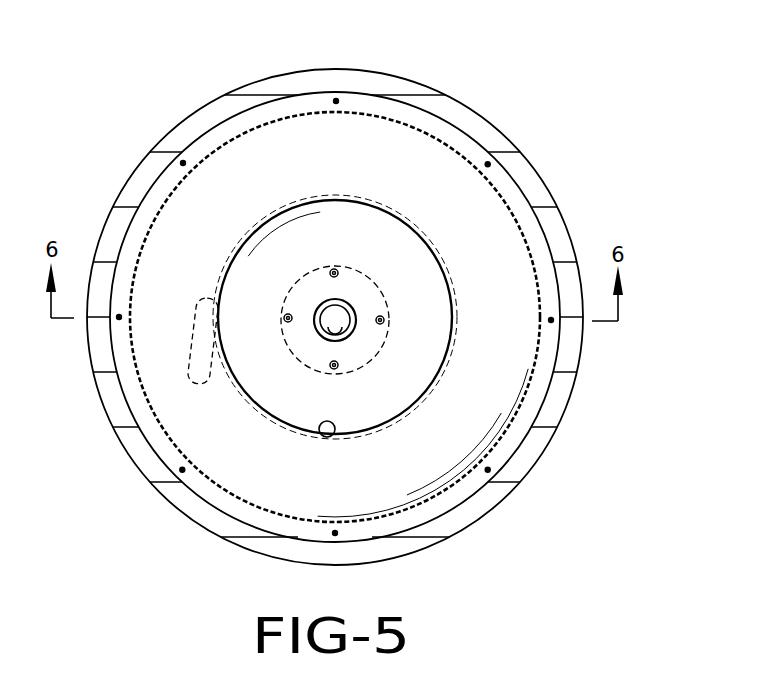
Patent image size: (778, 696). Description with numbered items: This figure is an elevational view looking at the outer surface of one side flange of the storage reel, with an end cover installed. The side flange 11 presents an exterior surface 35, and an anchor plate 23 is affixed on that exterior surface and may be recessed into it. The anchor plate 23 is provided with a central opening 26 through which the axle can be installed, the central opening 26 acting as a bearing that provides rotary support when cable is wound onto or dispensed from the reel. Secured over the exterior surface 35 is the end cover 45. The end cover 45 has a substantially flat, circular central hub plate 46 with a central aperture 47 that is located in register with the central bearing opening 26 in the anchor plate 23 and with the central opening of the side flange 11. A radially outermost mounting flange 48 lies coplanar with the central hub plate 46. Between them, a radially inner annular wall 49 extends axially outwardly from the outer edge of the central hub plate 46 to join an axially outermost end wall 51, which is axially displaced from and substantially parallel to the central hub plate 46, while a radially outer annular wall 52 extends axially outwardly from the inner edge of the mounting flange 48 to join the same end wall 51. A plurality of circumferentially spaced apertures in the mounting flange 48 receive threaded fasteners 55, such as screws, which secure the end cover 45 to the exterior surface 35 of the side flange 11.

The first side flange 11 is at (556, 194).
The anchor plate 23 is at (340, 304).
The central opening 26 is at (323, 330).
The exterior surface 35 is at (304, 83).
The end cover 45 is at (400, 159).
The central hub plate 46 is at (377, 383).
The central aperture 47 is at (320, 322).
The mounting flange 48 is at (362, 104).
The radially inner annular wall 49 is at (323, 432).
The axially outermost end wall 51 is at (497, 342).
The radially outer annular wall 52 is at (228, 493).
The threaded fasteners 55 is at (183, 163).